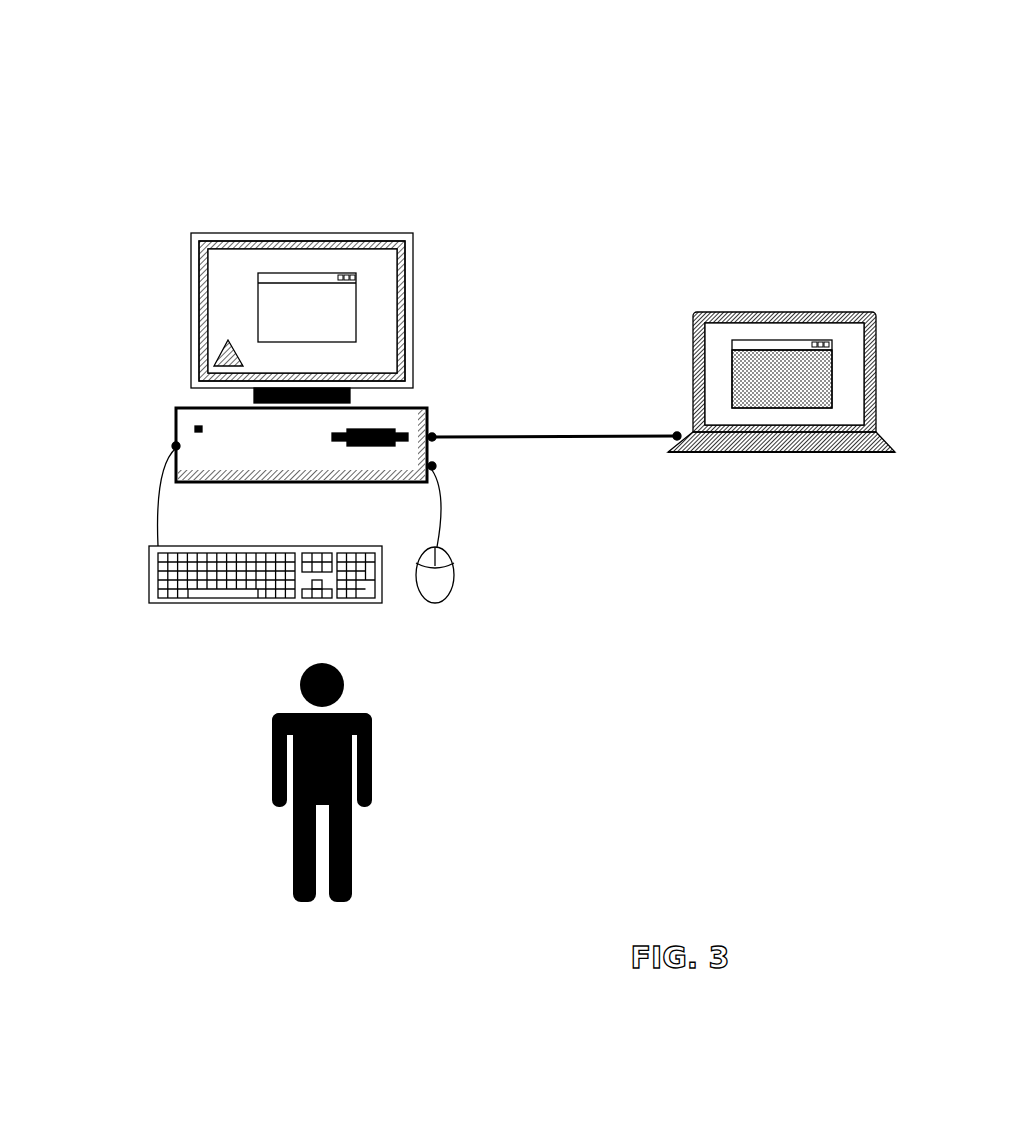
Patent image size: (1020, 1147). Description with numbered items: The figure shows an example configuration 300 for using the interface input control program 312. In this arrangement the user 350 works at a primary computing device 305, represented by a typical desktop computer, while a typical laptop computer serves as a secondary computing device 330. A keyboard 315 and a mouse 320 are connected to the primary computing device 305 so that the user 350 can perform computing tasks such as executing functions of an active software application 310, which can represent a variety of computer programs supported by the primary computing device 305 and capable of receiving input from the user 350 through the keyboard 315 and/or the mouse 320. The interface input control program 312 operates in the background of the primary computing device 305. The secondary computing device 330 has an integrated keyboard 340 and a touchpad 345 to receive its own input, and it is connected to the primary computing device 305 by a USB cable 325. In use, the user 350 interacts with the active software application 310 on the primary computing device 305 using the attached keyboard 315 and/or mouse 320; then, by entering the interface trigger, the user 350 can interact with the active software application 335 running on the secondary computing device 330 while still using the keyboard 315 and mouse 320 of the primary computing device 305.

The example configuration 300 is at (18, 41).
The primary computing device 305 is at (298, 332).
The active software application 310 is at (357, 280).
The interface input control program 312 is at (225, 363).
The keyboard 315 is at (265, 551).
The mouse 320 is at (429, 560).
The USB cable 325 is at (556, 464).
The secondary computing device 330 is at (753, 400).
The active software application 335 is at (582, 297).
The integrated keyboard 340 is at (733, 438).
The touchpad 345 is at (788, 440).
The user 350 is at (350, 782).